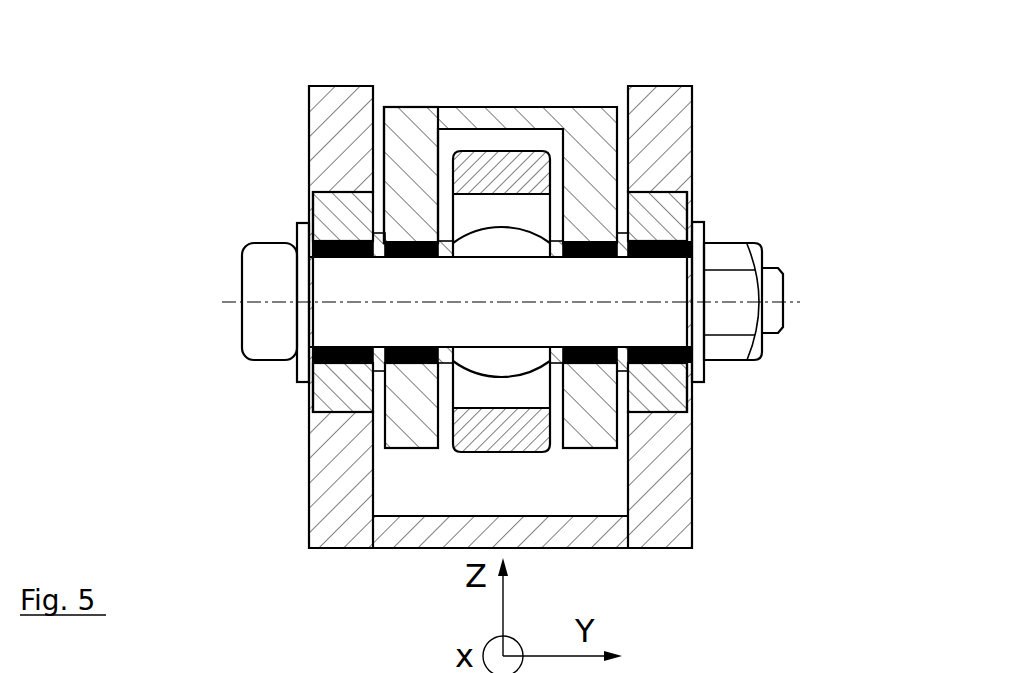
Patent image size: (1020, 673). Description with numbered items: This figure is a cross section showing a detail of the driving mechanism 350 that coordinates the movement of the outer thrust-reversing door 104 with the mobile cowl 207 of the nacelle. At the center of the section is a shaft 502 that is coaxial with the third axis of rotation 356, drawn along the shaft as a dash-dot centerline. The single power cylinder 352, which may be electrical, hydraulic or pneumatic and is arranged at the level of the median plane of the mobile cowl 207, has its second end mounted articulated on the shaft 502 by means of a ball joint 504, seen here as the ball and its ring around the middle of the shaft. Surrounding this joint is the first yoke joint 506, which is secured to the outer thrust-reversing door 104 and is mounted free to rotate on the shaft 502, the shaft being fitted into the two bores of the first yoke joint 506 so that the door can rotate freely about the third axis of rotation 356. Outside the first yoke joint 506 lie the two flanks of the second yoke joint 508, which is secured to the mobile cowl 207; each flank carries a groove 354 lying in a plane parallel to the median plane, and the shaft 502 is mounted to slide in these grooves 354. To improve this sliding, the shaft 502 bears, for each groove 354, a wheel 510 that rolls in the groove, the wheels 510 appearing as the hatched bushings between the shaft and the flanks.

The outer thrust-reversing door 104 is at (498, 110).
The mobile cowl 207 is at (670, 103).
The driving mechanism 350 is at (830, 513).
The power cylinder 352 is at (493, 437).
The groove 354 is at (673, 180).
The third axis of rotation 356 is at (805, 302).
The shaft 502 is at (355, 286).
The ball joint 504 is at (478, 244).
The first yoke joint 506 is at (405, 142).
The second yoke joint 508 is at (325, 100).
The wheel 510 is at (670, 220).